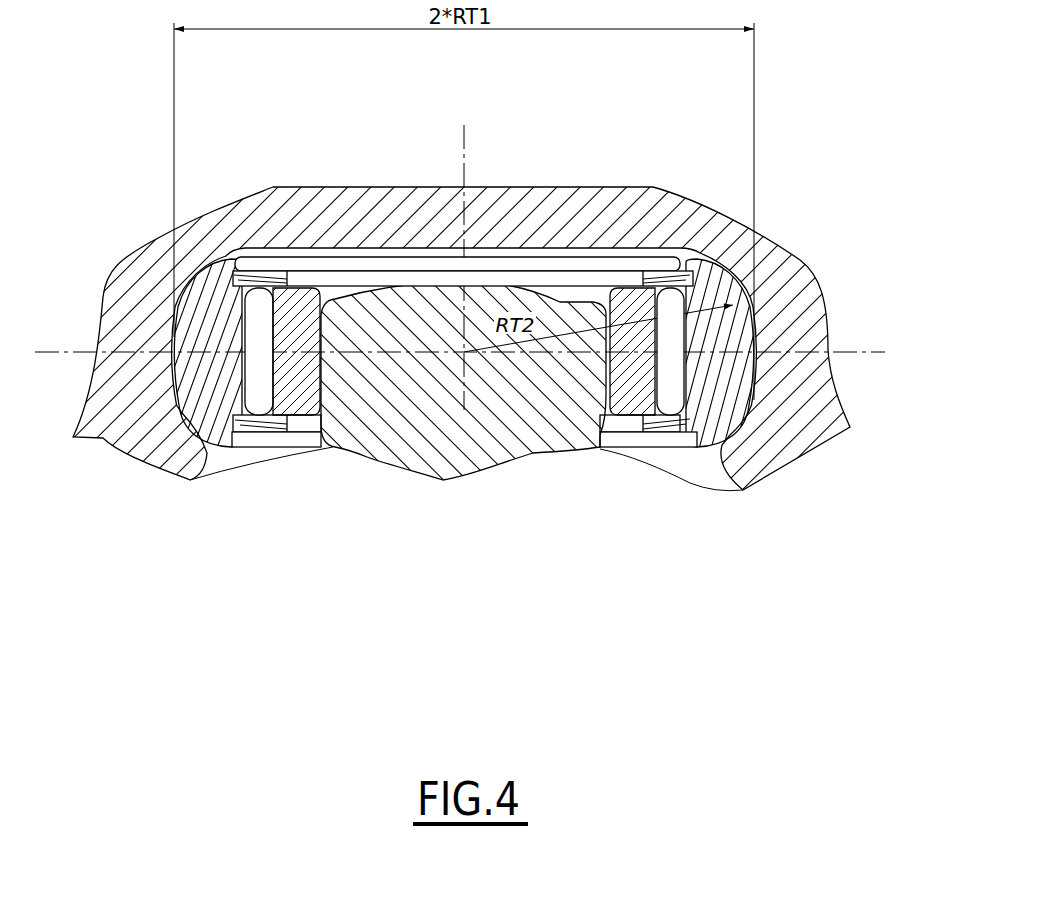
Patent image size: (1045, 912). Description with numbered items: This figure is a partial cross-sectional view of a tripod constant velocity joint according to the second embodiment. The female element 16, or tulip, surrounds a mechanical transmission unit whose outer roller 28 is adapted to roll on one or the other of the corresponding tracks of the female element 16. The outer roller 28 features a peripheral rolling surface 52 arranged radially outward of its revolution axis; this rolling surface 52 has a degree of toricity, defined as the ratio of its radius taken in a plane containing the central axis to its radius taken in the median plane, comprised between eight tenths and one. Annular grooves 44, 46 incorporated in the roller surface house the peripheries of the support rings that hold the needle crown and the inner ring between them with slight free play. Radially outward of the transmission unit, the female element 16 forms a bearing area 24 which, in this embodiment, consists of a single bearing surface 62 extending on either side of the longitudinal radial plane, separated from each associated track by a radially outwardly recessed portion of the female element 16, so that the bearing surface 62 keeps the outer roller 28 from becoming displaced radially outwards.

The female element 16 is at (800, 217).
The bearing area 24 is at (443, 267).
The outer roller 28 is at (355, 327).
The annular groove 44 is at (283, 444).
The annular groove 46 is at (295, 286).
The peripheral rolling surface 52 is at (762, 387).
The bearing surface 62 is at (568, 264).